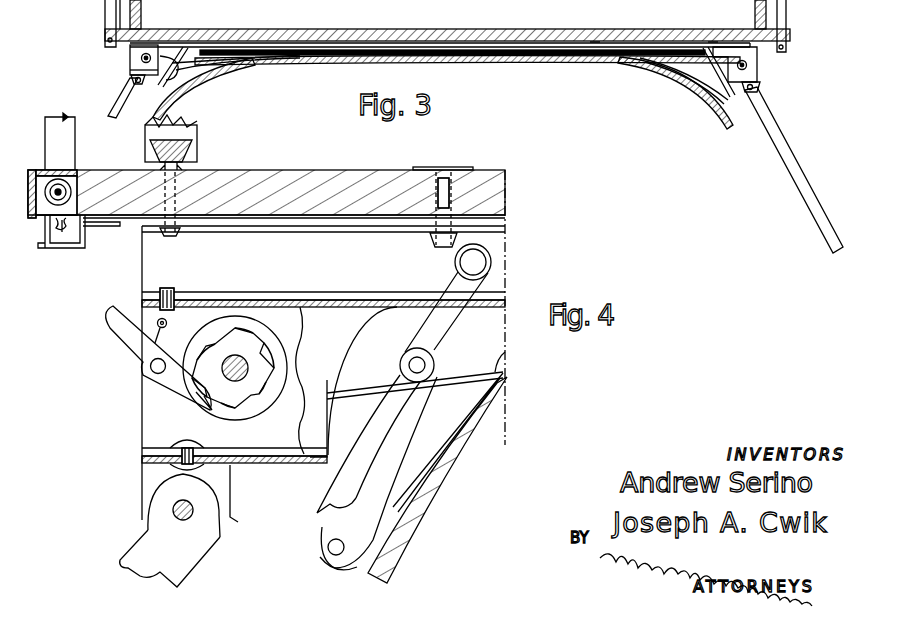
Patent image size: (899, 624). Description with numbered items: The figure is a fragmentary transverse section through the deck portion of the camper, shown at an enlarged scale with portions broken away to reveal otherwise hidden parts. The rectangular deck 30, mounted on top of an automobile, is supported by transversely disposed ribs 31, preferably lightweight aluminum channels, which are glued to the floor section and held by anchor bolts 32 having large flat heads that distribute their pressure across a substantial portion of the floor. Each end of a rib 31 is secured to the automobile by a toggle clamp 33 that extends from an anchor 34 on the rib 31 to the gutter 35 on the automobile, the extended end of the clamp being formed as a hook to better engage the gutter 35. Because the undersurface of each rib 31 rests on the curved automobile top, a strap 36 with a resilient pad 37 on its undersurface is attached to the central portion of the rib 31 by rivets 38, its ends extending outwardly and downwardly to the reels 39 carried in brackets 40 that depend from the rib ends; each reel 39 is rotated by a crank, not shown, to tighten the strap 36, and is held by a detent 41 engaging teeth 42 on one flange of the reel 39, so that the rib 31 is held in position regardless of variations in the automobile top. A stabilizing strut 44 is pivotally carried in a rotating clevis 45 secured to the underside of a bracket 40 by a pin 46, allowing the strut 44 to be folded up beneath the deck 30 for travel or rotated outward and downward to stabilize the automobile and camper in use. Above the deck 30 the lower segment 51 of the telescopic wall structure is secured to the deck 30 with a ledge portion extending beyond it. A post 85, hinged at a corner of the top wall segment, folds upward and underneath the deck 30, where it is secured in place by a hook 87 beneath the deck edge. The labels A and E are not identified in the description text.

In FIG. 3, the deck 30 is at (302, 28).
In FIG. 4, the deck 30 is at (492, 199).
In FIG. 3, the rib 31 is at (400, 38).
In FIG. 4, the rib 31 is at (323, 263).
In FIG. 4, the anchor bolt 32 is at (181, 240).
In FIG. 3, the toggle clamp 33 is at (183, 80).
In FIG. 4, the toggle clamp 33 is at (403, 425).
In FIG. 3, the anchor 34 is at (699, 46).
In FIG. 3, the gutter 35 is at (186, 98).
In FIG. 4, the gutter 35 is at (325, 550).
In FIG. 3, the strap 36 is at (190, 50).
In FIG. 4, the strap 36 is at (486, 361).
In FIG. 3, the resilient pad 37 is at (220, 64).
In FIG. 4, the resilient pad 37 is at (480, 378).
In FIG. 3, the rivet 38 is at (557, 44).
In FIG. 3, the reel 39 is at (141, 59).
In FIG. 4, the reel 39 is at (214, 412).
In FIG. 3, the bracket 40 is at (760, 58).
In FIG. 4, the bracket 40 is at (153, 401).
In FIG. 4, the detent 41 is at (125, 334).
In FIG. 4, the teeth 42 is at (266, 354).
In FIG. 3, the stabilizing strut 44 is at (122, 100).
In FIG. 4, the stabilizing strut 44 is at (140, 531).
In FIG. 4, the rotating clevis 45 is at (226, 526).
In FIG. 4, the pin 46 is at (199, 446).
In FIG. 4, the lower segment 51 is at (194, 142).
In FIG. 3, the post 85 is at (786, 18).
In FIG. 4, the post 85 is at (68, 152).
In FIG. 4, the hook 87 is at (67, 250).
In FIG. 3, the blade assembly A is at (323, 69).
In FIG. 4, the end E is at (28, 188).